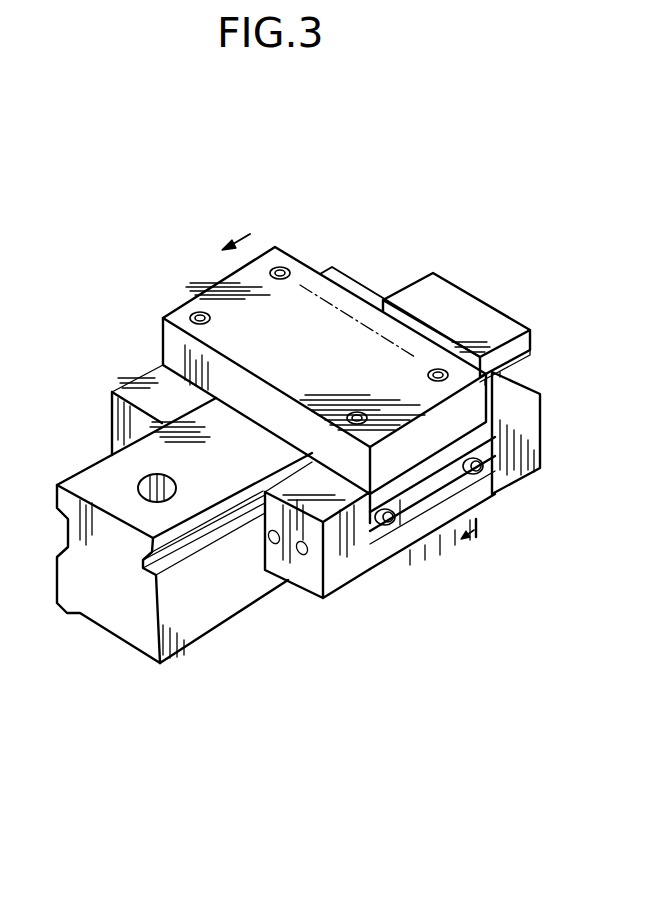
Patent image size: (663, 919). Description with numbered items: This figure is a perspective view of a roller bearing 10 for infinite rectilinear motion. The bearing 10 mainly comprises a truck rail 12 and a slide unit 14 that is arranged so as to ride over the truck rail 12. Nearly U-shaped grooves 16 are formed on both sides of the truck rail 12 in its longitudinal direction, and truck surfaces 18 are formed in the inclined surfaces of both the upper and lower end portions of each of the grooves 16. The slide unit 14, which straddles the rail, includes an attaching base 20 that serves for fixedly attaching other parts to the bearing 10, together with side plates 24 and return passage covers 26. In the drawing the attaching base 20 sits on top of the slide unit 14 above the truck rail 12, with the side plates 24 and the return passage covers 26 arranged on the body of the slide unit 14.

The roller bearing 10 is at (229, 173).
The truck rail 12 is at (460, 304).
The slide unit 14 is at (345, 604).
The grooves 16 is at (152, 582).
The truck surfaces 18 is at (138, 557).
The attaching base 20 is at (197, 295).
The side plates 24 is at (352, 283).
The return passage covers 26 is at (403, 530).